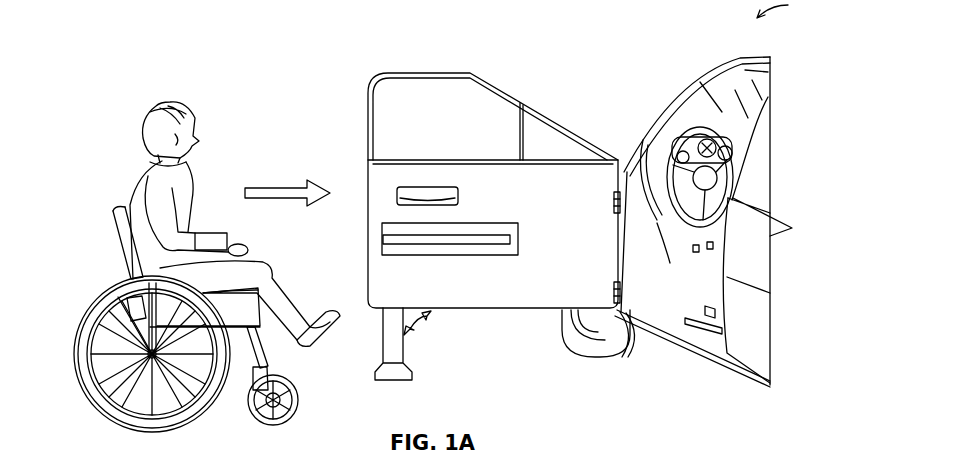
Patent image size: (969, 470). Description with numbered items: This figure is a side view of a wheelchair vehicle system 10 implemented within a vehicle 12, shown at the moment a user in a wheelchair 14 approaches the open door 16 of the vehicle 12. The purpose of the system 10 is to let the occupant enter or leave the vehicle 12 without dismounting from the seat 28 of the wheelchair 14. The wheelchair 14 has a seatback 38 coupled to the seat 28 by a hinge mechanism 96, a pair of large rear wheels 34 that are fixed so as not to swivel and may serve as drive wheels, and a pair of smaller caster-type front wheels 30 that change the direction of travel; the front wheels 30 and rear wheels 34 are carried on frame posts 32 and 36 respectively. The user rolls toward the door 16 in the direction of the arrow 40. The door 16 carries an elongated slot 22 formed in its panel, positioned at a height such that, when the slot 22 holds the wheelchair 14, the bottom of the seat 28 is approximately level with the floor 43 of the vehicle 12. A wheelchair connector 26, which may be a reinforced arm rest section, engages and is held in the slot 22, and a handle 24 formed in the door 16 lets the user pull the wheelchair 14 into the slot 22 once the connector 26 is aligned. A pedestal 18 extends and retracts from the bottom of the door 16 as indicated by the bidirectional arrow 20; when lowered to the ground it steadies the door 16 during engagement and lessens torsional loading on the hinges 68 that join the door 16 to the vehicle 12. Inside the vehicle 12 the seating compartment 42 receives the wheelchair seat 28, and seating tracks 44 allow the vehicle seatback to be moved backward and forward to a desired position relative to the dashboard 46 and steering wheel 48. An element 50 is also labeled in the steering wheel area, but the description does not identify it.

The wheelchair vehicle system 10 is at (787, 9).
The vehicle 12 is at (758, 57).
The wheelchair 14 is at (116, 205).
The door 16 is at (532, 107).
The pedestal 18 is at (397, 352).
The bidirectional arrow 20 is at (428, 322).
The elongated slot 22 is at (467, 223).
The handle 24 is at (422, 185).
The wheelchair connector 26 is at (218, 233).
The seat 28 is at (237, 303).
The front wheels 30 is at (263, 420).
The frame post 32 is at (262, 348).
The rear wheels 34 is at (107, 290).
The frame post 36 is at (88, 371).
The seatback 38 is at (119, 243).
The arrow 40 is at (277, 186).
The seating compartment 42 is at (667, 340).
The floor 43 is at (656, 322).
The seating tracks 44 is at (710, 306).
The dashboard 46 is at (665, 147).
The steering wheel 48 is at (700, 130).
The steering wheel hub 50 is at (714, 180).
The hinges 68 is at (613, 200).
The hinge mechanism 96 is at (97, 346).